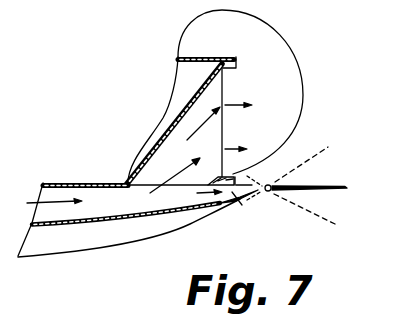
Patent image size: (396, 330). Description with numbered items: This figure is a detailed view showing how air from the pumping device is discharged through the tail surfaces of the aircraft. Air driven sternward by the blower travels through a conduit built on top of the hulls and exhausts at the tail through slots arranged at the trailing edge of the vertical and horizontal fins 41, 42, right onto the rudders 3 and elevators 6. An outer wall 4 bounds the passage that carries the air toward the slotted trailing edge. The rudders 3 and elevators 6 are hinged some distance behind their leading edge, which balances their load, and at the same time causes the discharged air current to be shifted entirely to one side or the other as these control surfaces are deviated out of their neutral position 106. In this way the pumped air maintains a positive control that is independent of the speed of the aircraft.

The rudder 3 is at (240, 92).
The outer wall 4 is at (168, 108).
The horizontal fin 42 is at (215, 126).
The vertical fin 41 is at (244, 207).
The neutral position 106 is at (310, 212).
The elevator 6 is at (323, 186).